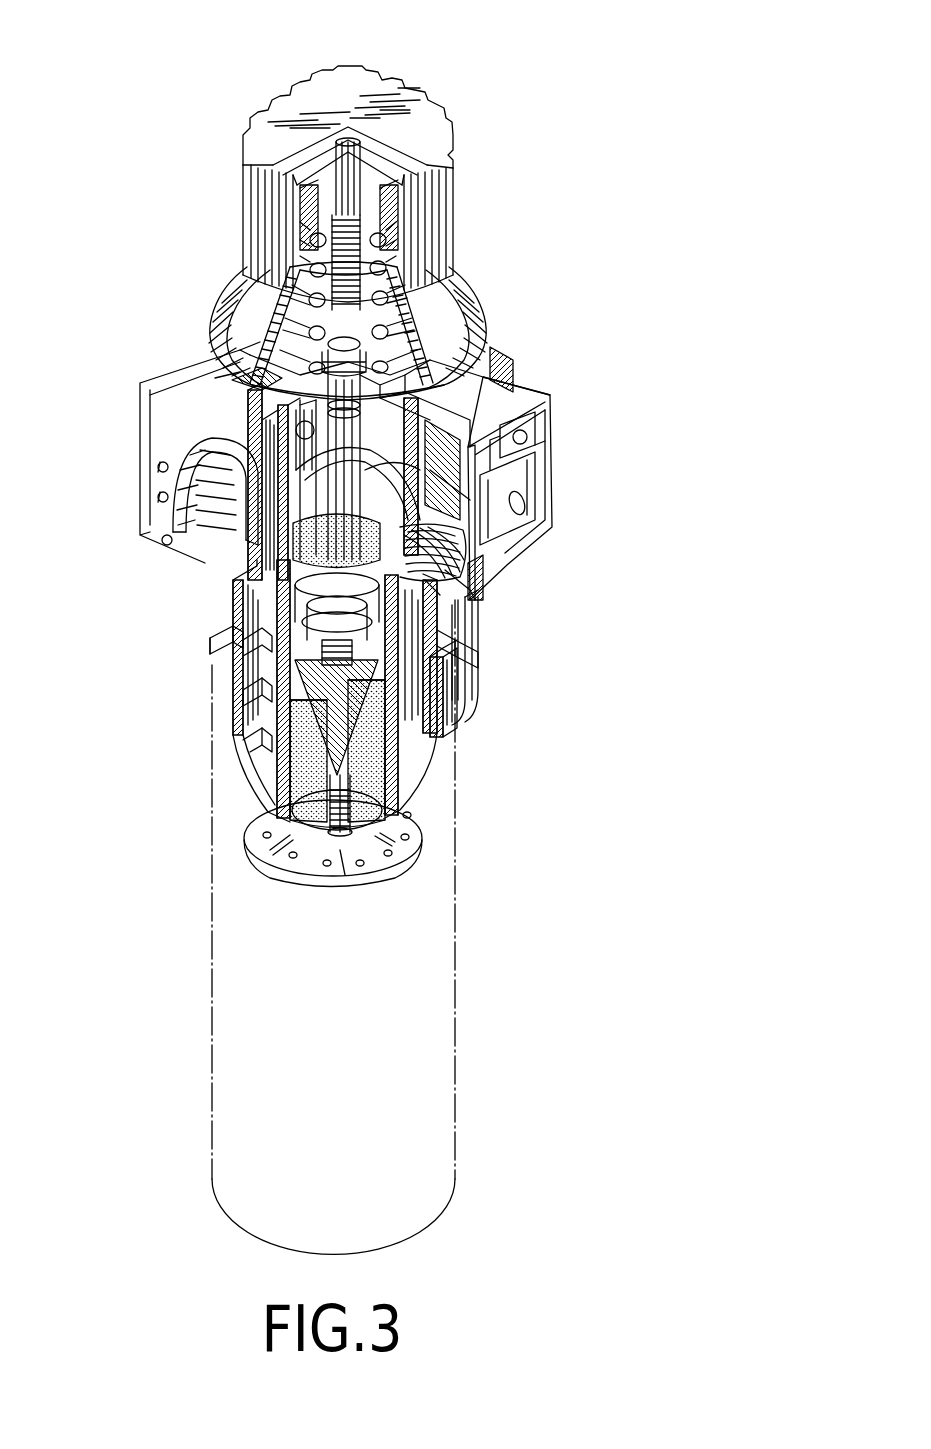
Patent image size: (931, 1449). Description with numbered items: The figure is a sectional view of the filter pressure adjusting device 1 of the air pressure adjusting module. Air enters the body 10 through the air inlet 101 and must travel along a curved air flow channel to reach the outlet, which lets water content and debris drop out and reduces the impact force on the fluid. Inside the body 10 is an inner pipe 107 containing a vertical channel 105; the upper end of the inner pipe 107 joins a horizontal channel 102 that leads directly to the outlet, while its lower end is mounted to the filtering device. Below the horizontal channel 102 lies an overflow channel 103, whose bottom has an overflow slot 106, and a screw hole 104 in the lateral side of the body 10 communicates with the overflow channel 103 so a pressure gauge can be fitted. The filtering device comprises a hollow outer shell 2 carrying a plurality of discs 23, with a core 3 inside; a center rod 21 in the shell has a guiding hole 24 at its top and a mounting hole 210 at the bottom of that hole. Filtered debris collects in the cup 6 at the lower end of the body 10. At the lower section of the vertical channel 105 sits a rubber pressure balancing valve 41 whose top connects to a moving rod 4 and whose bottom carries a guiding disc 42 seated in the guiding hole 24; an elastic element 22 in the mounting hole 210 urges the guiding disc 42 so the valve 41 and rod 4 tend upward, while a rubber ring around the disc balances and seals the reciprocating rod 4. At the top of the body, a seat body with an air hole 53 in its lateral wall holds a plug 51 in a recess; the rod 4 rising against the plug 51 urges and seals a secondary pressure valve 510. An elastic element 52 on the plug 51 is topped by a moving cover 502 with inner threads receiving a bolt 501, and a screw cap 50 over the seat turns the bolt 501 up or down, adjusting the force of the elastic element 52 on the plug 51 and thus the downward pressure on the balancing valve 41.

The filter pressure adjusting device 1 is at (577, 418).
The outer shell 2 is at (250, 763).
The core 3 is at (420, 828).
The moving rod 4 is at (535, 535).
The cup 6 is at (227, 1044).
The body 10 is at (165, 383).
The center rod 21 is at (420, 768).
The elastic element 22 is at (257, 650).
The disc 23 is at (247, 703).
The guiding hole 24 is at (467, 718).
The pressure balancing valve 41 is at (248, 380).
The guiding disc 42 is at (467, 663).
The screw cap 50 is at (438, 205).
The plug 51 is at (250, 380).
The elastic element 52 is at (295, 250).
The air hole 53 is at (425, 320).
The air inlet 101 is at (215, 570).
The horizontal channel 102 is at (388, 410).
The overflow channel 103 is at (450, 602).
The screw hole 104 is at (500, 560).
The vertical channel 105 is at (513, 373).
The overflow slot 106 is at (200, 540).
The inner pipe 107 is at (233, 577).
The mounting hole 210 is at (467, 722).
The bolt 501 is at (410, 297).
The moving cover 502 is at (393, 160).
The secondary pressure valve 510 is at (265, 330).